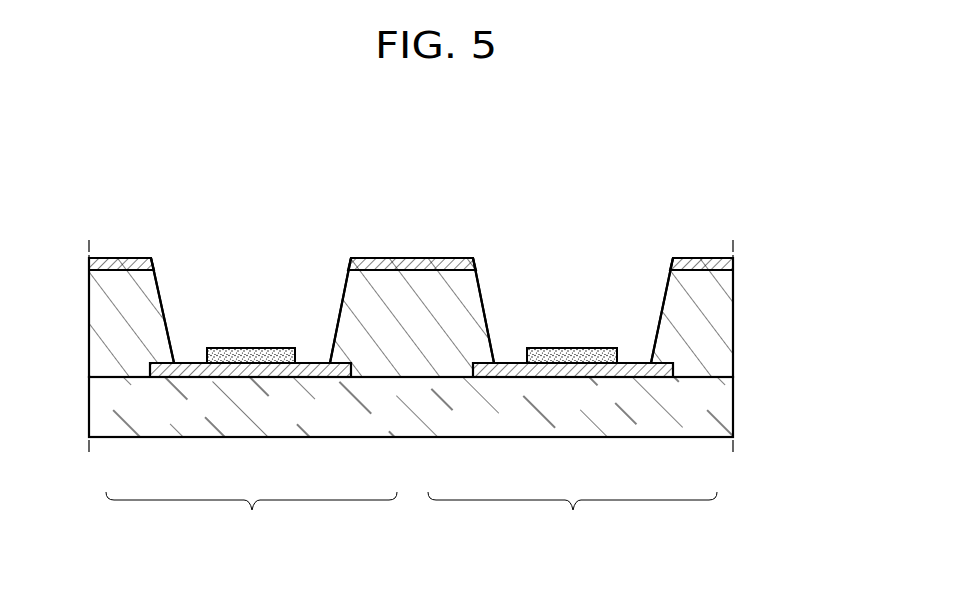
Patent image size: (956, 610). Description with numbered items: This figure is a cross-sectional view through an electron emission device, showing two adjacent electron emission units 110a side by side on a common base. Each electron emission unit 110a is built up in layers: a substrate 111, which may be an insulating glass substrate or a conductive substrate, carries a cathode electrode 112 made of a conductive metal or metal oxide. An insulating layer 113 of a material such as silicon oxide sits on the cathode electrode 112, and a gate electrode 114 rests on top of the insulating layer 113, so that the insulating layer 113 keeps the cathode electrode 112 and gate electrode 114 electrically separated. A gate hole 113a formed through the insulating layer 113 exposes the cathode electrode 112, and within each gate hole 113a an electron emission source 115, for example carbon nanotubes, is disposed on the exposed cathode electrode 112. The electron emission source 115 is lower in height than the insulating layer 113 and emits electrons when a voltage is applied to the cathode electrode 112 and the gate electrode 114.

The electron emission unit 110a is at (411, 515).
The substrate 111 is at (718, 407).
The cathode electrode 112 is at (250, 365).
The insulating layer 113 is at (718, 323).
The gate hole 113a is at (337, 312).
The gate electrode 114 is at (410, 258).
The electron emission source 115 is at (250, 348).